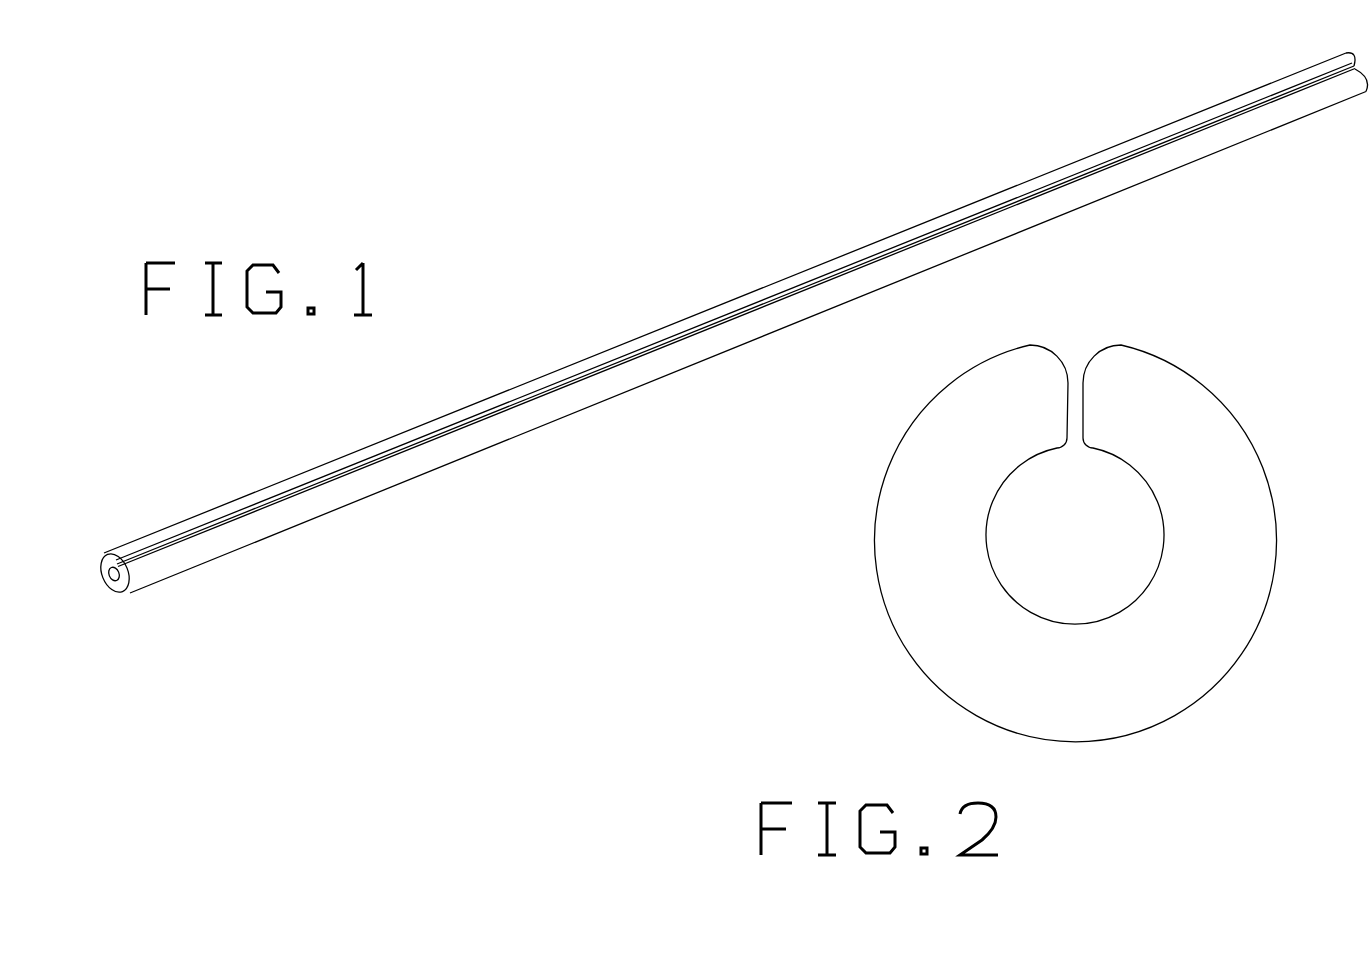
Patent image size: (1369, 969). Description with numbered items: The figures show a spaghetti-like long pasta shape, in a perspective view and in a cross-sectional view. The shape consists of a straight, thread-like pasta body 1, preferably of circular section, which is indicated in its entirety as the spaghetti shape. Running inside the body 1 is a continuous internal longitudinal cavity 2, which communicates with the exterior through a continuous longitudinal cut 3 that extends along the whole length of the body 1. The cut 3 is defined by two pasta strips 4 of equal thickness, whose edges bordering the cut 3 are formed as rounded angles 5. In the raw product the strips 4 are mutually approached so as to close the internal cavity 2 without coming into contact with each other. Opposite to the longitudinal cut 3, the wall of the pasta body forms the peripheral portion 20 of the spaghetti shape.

In FIG. 1, the thread-like pasta body 1 is at (731, 386).
In FIG. 2, the thread-like pasta body 1 is at (1031, 507).
In FIG. 1, the continuous internal longitudinal cavity 2 is at (107, 588).
In FIG. 2, the continuous internal longitudinal cavity 2 is at (1153, 573).
In FIG. 1, the longitudinal cut 3 is at (768, 298).
In FIG. 2, the longitudinal cut 3 is at (1083, 388).
In FIG. 2, the pasta strips 4 is at (1013, 408).
In FIG. 2, the rounded angles 5 is at (1047, 343).
In FIG. 2, the peripheral portion of the spaghetti shape 20 is at (1110, 705).